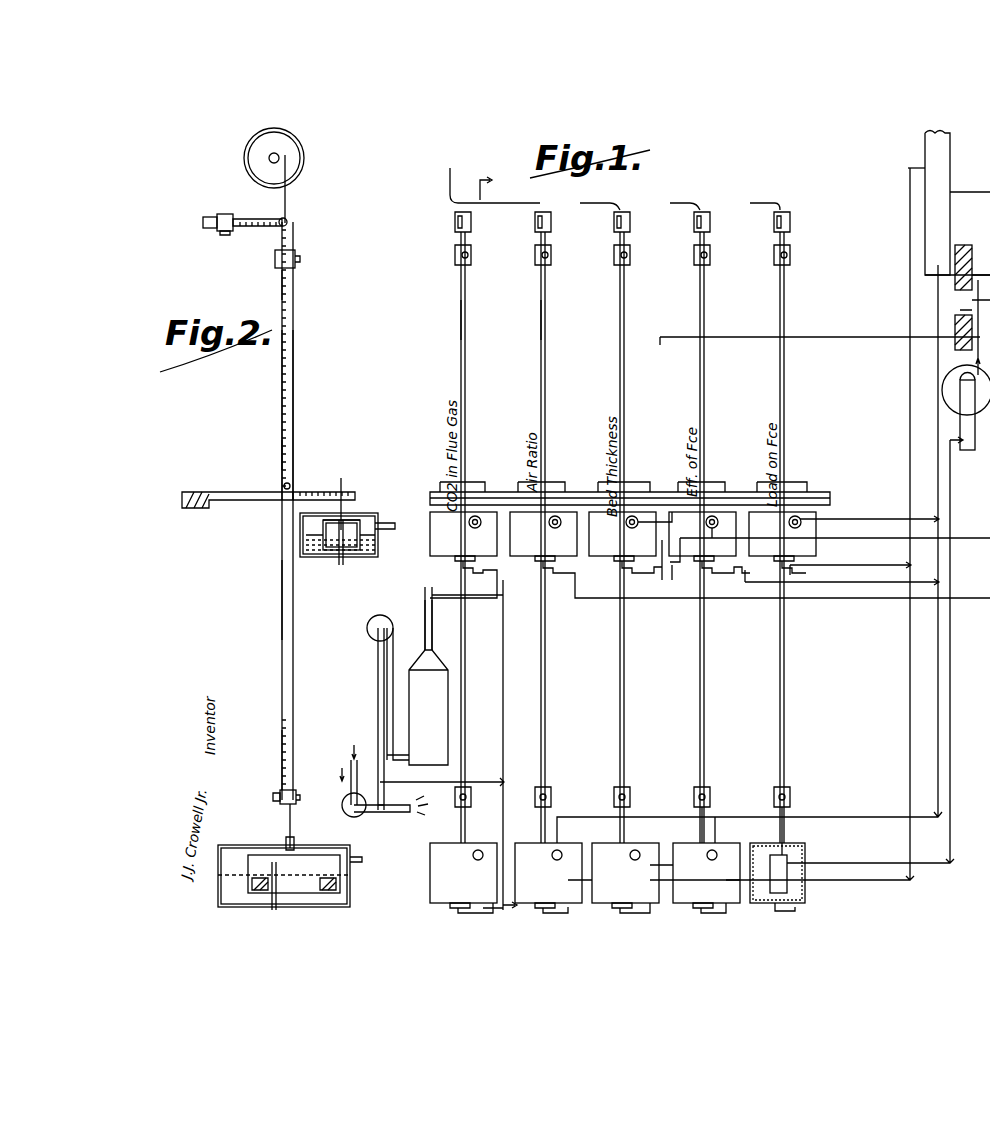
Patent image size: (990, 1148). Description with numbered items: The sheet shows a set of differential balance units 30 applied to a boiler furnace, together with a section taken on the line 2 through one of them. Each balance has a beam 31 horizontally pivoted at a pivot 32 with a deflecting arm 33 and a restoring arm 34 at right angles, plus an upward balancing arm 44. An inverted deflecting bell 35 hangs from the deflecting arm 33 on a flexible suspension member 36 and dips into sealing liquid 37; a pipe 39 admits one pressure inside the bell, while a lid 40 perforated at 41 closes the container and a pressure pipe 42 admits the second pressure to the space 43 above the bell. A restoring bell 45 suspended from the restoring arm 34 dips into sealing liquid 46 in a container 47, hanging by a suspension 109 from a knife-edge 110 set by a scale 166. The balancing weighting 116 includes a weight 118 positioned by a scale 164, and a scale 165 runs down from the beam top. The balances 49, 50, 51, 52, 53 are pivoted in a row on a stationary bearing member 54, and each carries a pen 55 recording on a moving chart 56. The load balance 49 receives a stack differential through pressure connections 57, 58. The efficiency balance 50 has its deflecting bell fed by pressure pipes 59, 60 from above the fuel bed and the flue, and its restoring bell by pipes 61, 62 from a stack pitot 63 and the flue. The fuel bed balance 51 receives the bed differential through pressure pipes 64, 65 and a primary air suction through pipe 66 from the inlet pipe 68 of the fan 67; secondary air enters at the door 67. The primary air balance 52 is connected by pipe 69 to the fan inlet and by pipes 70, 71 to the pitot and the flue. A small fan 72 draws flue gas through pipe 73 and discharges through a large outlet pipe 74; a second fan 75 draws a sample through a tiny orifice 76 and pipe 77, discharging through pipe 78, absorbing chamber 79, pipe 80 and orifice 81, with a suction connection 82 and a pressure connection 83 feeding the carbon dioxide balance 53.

In FIG. 1, the section line 2 is at (495, 542).
In FIG. 2, the differential balance unit 30 is at (294, 298).
In FIG. 1, the differential balance unit 30 is at (466, 300).
In FIG. 2, the beam 31 is at (263, 455).
In FIG. 2, the pivot 32 is at (283, 485).
In FIG. 2, the deflecting arm 33 is at (348, 492).
In FIG. 2, the restoring arm 34 is at (282, 590).
In FIG. 2, the deflecting bell 35 is at (360, 530).
In FIG. 2, the suspension member 36 is at (341, 478).
In FIG. 2, the sealing liquid 37 is at (316, 545).
In FIG. 2, the pipe 39 is at (344, 560).
In FIG. 2, the lid 40 is at (372, 516).
In FIG. 2, the perforation 41 is at (345, 518).
In FIG. 2, the pressure pipe 42 is at (390, 523).
In FIG. 2, the space 43 is at (325, 534).
In FIG. 2, the balancing arm 44 is at (294, 367).
In FIG. 1, the balancing arm 44 is at (466, 325).
In FIG. 2, the restoring bell 45 is at (340, 868).
In FIG. 2, the sealing liquid 46 is at (232, 886).
In FIG. 2, the container 47 is at (350, 893).
In FIG. 1, the container 47 is at (511, 878).
In FIG. 1, the balance 49 is at (785, 640).
In FIG. 1, the balance 50 is at (705, 655).
In FIG. 1, the balance 51 is at (625, 650).
In FIG. 1, the balance 52 is at (546, 660).
In FIG. 1, the balance 53 is at (466, 663).
In FIG. 2, the stationary bearing member 54 is at (225, 500).
In FIG. 1, the stationary bearing member 54 is at (820, 490).
In FIG. 2, the pen 55 is at (288, 195).
In FIG. 1, the pen 55 is at (492, 212).
In FIG. 2, the moving chart 56 is at (295, 162).
In FIG. 1, the pressure connection 57 is at (843, 562).
In FIG. 1, the pressure connection 58 is at (846, 519).
In FIG. 1, the pressure pipe 59 is at (836, 538).
In FIG. 1, the pressure pipe 60 is at (846, 582).
In FIG. 1, the pipe 61 is at (726, 882).
In FIG. 1, the pipe 62 is at (716, 826).
In FIG. 1, the pitot 63 is at (938, 162).
In FIG. 1, the pressure pipe 64 is at (660, 567).
In FIG. 1, the pressure pipe 65 is at (832, 337).
In FIG. 1, the pressure pipe 66 is at (850, 878).
In FIG. 1, the fan 67 is at (955, 300).
In FIG. 1, the inlet pipe 68 is at (980, 445).
In FIG. 1, the pipe 69 is at (578, 580).
In FIG. 1, the pipe 70 is at (753, 540).
In FIG. 1, the pipe 71 is at (570, 817).
In FIG. 1, the small fan 72 is at (362, 815).
In FIG. 1, the pipe 73 is at (350, 787).
In FIG. 1, the outlet pipe 74 is at (400, 812).
In FIG. 1, the second fan 75 is at (380, 615).
In FIG. 1, the orifice 76 is at (386, 797).
In FIG. 1, the pipe 77 is at (377, 649).
In FIG. 1, the pipe 78 is at (394, 650).
In FIG. 1, the absorbing chamber 79 is at (428, 707).
In FIG. 1, the pipe 80 is at (433, 625).
In FIG. 1, the orifice 81 is at (428, 585).
In FIG. 1, the suction connection 82 is at (510, 860).
In FIG. 1, the pressure connection 83 is at (480, 595).
In FIG. 2, the cord 109 is at (258, 843).
In FIG. 2, the knife-edge 110 is at (290, 790).
In FIG. 2, the balancing weighting 116 is at (296, 262).
In FIG. 2, the weight 118 is at (233, 205).
In FIG. 2, the scale 164 is at (244, 236).
In FIG. 2, the scale 165 is at (269, 285).
In FIG. 2, the scale 166 is at (282, 757).